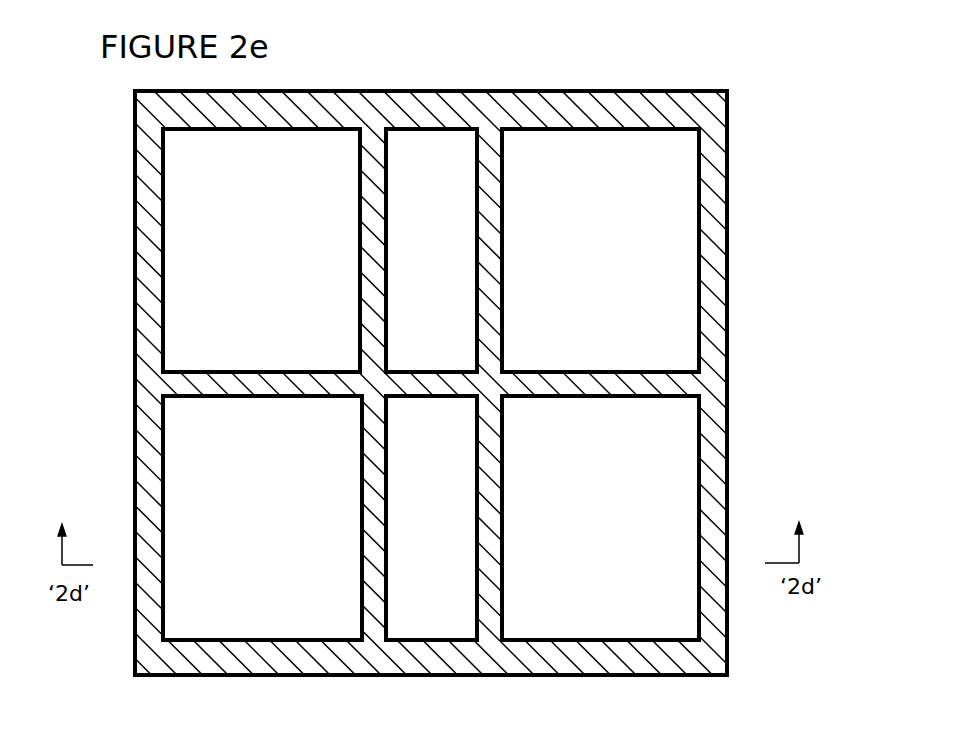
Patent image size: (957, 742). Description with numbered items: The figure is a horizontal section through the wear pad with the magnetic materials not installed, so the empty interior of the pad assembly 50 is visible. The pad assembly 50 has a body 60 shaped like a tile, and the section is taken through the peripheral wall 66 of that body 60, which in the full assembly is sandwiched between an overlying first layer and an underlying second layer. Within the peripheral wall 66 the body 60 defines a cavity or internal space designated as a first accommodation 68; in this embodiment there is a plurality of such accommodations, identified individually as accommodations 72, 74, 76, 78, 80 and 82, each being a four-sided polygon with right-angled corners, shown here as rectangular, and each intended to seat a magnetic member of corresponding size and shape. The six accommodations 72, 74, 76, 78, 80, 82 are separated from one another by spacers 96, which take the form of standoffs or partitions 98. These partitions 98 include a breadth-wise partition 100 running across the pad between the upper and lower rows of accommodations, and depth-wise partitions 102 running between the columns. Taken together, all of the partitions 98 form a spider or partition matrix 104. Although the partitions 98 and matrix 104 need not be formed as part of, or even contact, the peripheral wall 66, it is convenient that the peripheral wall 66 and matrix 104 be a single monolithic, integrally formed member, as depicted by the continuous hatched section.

The pad assembly 50 is at (575, 89).
The body 60 is at (598, 89).
The peripheral wall 66 is at (727, 243).
The first accommodation 68 is at (650, 214).
The accommodation 72 is at (194, 163).
The accommodation 74 is at (427, 155).
The accommodation 76 is at (680, 257).
The accommodation 78 is at (678, 485).
The accommodation 80 is at (423, 616).
The accommodation 82 is at (196, 494).
The spacers 96 is at (646, 372).
The partitions 98 is at (628, 372).
The breadth-wise partition 100 is at (615, 397).
The depth-wise partition 102 is at (372, 177).
The partition matrix 104 is at (208, 378).